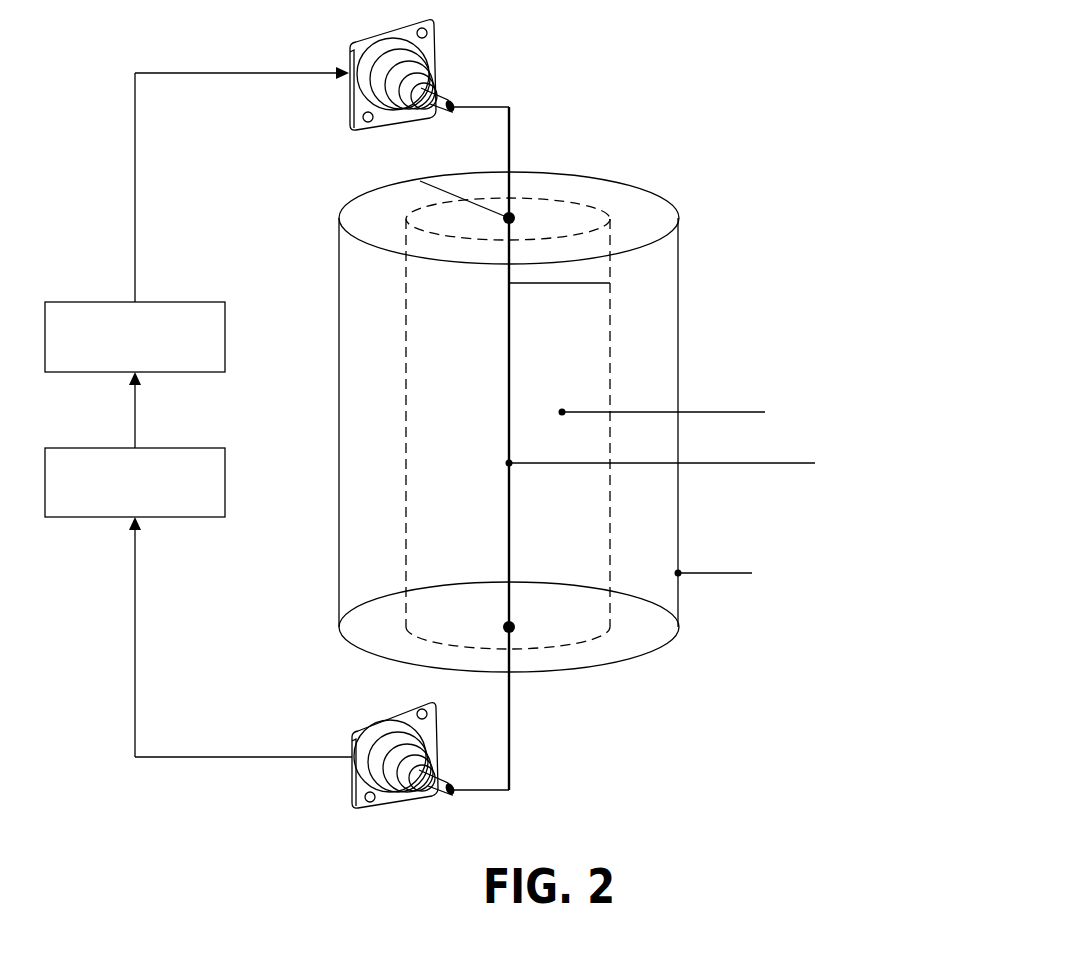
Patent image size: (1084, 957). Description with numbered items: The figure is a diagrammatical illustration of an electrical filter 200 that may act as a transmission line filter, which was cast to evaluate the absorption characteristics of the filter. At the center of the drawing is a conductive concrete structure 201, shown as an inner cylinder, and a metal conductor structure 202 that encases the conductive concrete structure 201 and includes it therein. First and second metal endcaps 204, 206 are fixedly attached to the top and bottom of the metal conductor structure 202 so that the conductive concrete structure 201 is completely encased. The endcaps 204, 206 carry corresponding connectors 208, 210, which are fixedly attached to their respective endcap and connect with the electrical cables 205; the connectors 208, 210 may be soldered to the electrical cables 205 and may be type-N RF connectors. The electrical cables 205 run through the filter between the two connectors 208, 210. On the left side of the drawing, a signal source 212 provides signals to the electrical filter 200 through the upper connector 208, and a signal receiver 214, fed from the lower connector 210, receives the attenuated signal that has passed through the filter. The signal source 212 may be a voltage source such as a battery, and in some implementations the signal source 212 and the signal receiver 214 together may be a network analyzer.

The electrical filter 200 is at (758, 224).
The conductive concrete structure 201 is at (476, 462).
The metal conductor structure 202 is at (393, 339).
The first metal endcap 204 is at (580, 195).
The electrical cables 205 is at (505, 382).
The second metal endcap 206 is at (588, 668).
The connector 208 is at (388, 30).
The connector 210 is at (368, 812).
The signal source 212 is at (190, 298).
The signal receiver 214 is at (190, 446).